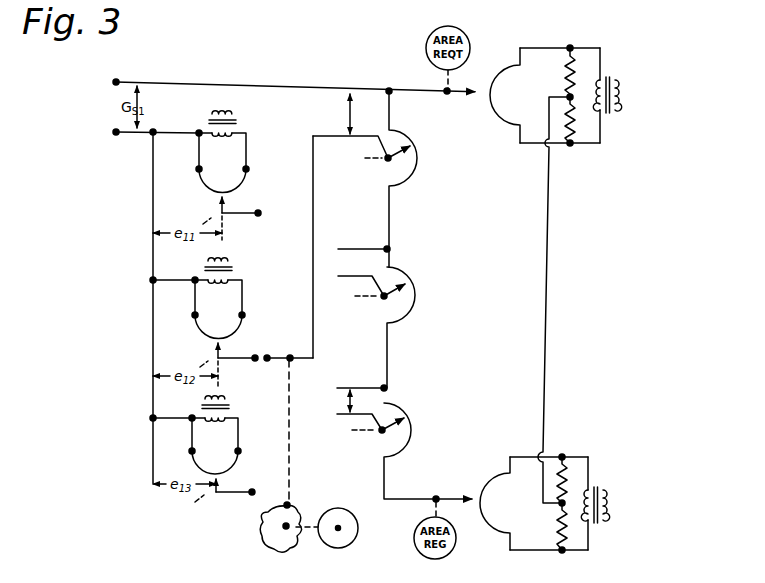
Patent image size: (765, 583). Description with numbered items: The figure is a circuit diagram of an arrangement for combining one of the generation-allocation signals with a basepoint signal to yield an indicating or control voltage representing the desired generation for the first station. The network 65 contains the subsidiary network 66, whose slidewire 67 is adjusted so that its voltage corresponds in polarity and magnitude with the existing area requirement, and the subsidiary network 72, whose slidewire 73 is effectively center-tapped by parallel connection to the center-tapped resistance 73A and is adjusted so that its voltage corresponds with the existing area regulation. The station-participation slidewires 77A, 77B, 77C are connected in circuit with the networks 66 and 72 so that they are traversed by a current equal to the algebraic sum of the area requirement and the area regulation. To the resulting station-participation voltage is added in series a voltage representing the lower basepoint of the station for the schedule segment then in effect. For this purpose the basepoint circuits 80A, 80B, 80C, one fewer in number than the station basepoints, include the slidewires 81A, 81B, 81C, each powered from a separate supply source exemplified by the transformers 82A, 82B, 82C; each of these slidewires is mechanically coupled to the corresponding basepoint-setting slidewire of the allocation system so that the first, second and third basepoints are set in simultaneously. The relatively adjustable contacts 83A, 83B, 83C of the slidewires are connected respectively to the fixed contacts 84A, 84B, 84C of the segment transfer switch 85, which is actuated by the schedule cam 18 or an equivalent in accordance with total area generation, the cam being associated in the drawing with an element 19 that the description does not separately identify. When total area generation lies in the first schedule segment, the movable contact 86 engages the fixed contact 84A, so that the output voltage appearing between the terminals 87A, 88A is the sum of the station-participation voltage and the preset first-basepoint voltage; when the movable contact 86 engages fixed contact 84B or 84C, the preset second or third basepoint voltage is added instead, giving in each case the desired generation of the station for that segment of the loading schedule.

The terminal 87A is at (118, 80).
The terminal 88A is at (149, 306).
The basepoint circuit 80A is at (238, 163).
The slidewire 81A is at (241, 186).
The transformer 82A is at (240, 130).
The adjustable contact 83A is at (218, 209).
The fixed contact 84A is at (258, 212).
The basepoint circuit 80B is at (234, 310).
The slidewire 81B is at (239, 330).
The transformer 82B is at (236, 277).
The adjustable contact 83B is at (214, 353).
The fixed contact 84B is at (255, 356).
The basepoint circuit 80C is at (231, 446).
The slidewire 81C is at (236, 464).
The transformer 82C is at (233, 415).
The adjustable contact 83C is at (218, 494).
The fixed contact 84C is at (259, 482).
The segment transfer switch 85 is at (326, 382).
The movable contact 86 is at (294, 347).
The network 65 is at (398, 296).
The station-participation slidewire 77A is at (413, 161).
The station-participation slidewire 77B is at (413, 305).
The station-participation slidewire 77C is at (404, 408).
The subsidiary network 66 is at (546, 274).
The slidewire 67 is at (501, 114).
The subsidiary network 72 is at (542, 488).
The slidewire 73 is at (494, 480).
The center-tapped resistance 73A is at (566, 470).
The schedule cam 18 is at (283, 548).
The area generation indicator 19 is at (346, 546).